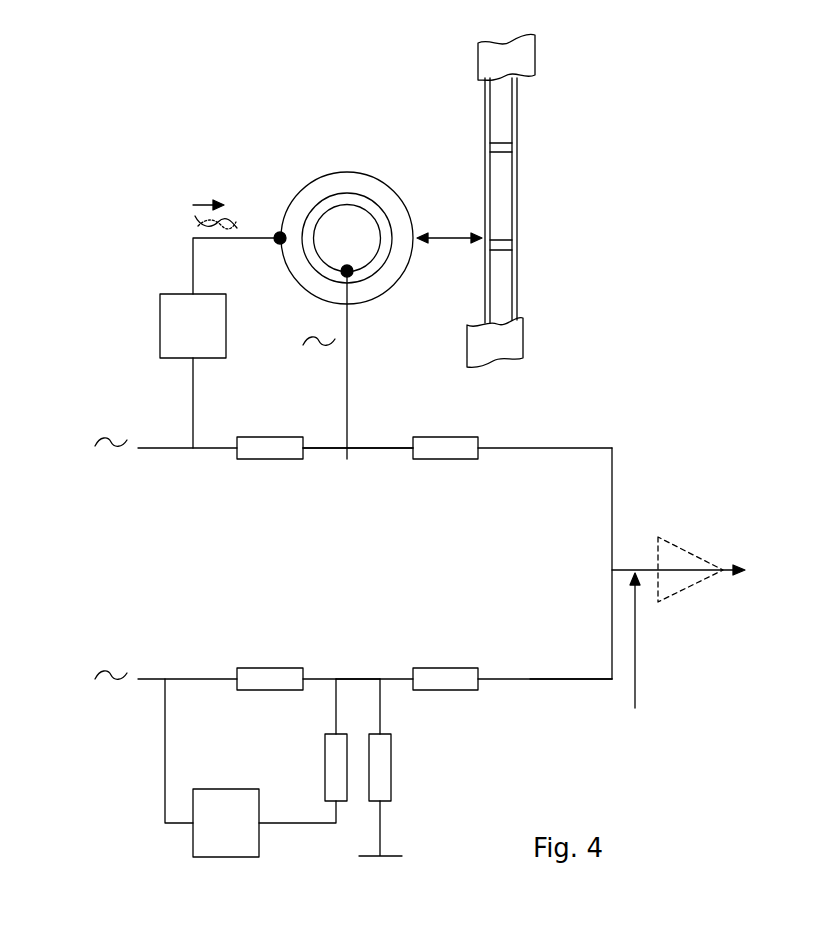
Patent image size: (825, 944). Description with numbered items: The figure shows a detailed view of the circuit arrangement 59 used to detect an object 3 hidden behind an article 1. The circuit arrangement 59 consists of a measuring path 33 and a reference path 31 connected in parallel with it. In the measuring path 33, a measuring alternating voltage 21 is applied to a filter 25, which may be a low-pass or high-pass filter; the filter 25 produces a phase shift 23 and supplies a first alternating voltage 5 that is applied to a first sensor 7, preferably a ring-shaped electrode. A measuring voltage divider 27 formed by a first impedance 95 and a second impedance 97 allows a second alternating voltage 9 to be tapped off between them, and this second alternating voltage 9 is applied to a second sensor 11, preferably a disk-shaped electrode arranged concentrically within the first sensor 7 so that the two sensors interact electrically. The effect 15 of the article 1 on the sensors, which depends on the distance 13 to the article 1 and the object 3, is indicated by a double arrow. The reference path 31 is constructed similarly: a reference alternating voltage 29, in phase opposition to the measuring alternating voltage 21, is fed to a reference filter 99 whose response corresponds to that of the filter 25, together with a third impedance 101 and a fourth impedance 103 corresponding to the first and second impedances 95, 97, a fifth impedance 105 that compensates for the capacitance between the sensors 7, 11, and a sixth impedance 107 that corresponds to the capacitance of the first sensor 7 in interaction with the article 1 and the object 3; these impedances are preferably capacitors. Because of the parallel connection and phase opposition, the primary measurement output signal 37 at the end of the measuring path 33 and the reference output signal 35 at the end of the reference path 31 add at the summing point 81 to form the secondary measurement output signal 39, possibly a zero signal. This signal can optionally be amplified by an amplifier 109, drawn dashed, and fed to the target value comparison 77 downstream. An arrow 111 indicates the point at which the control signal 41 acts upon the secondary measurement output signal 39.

The article 1 is at (492, 145).
The object 3 is at (503, 190).
The first alternating voltage 5 is at (275, 235).
The first sensor 7 is at (307, 202).
The second alternating voltage 9 is at (348, 328).
The second sensor 11 is at (383, 280).
The distance 13 is at (436, 273).
The effect 15 is at (450, 235).
The measuring alternating voltage 21 is at (157, 448).
The phase shift 23 is at (203, 203).
The filter 25 is at (180, 339).
The measuring voltage divider 27 is at (378, 448).
The reference alternating voltage 29 is at (152, 677).
The reference path 31 is at (368, 650).
The measuring path 33 is at (296, 472).
The reference output signal 35 is at (530, 682).
The primary measurement output signal 37 is at (590, 447).
The secondary measurement output signal 39 is at (620, 568).
The control signal 41 is at (623, 740).
The circuit arrangement 59 is at (472, 571).
The target value comparison 77 is at (752, 583).
The summing point 81 is at (624, 565).
The first impedance 95 is at (277, 443).
The second impedance 97 is at (452, 453).
The reference filter 99 is at (212, 835).
The third impedance 101 is at (270, 675).
The fourth impedance 103 is at (445, 675).
The fifth impedance 105 is at (328, 757).
The sixth impedance 107 is at (385, 760).
The amplifier 109 is at (692, 552).
The arrow 111 is at (637, 620).